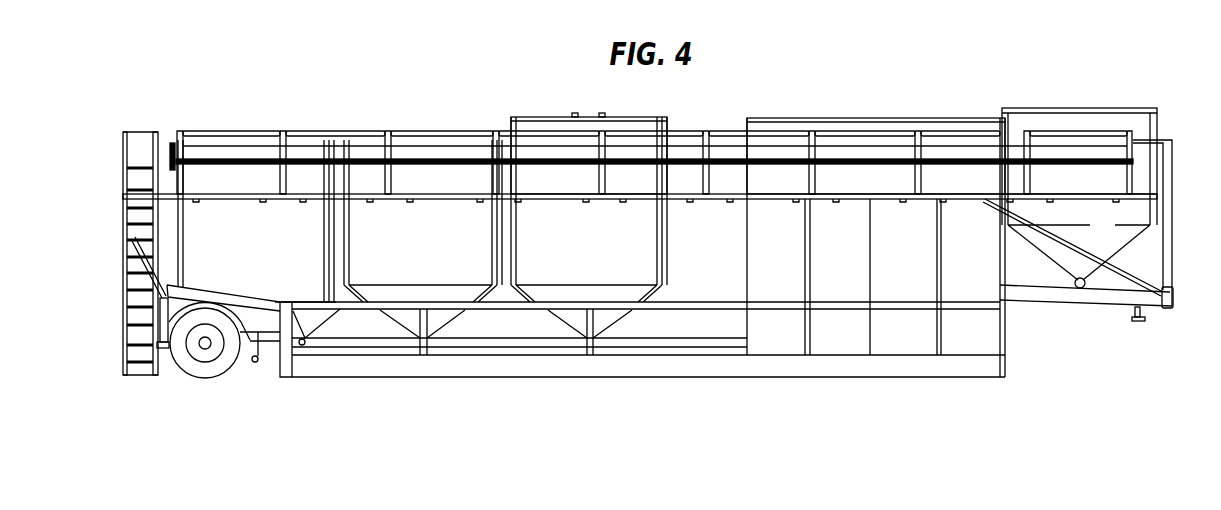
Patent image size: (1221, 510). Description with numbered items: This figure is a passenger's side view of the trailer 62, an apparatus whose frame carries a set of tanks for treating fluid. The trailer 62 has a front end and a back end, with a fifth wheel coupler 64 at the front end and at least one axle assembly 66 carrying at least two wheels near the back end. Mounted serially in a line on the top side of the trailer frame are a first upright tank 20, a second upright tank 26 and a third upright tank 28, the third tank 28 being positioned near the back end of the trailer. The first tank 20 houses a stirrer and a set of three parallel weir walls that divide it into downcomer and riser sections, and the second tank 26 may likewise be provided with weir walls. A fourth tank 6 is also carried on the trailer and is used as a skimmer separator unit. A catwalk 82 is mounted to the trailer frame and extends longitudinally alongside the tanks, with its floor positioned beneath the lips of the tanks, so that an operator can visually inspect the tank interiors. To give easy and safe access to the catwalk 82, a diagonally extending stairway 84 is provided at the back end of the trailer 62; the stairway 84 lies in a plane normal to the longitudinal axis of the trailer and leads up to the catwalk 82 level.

The fourth tank 6 is at (1095, 235).
The first upright tank 20 is at (575, 247).
The second upright tank 26 is at (409, 247).
The third upright tank 28 is at (242, 247).
The trailer 62 is at (358, 106).
The fifth wheel coupler 64 is at (1139, 322).
The axle assembly 66 is at (213, 352).
The catwalk 82 is at (214, 193).
The stairway 84 is at (123, 188).